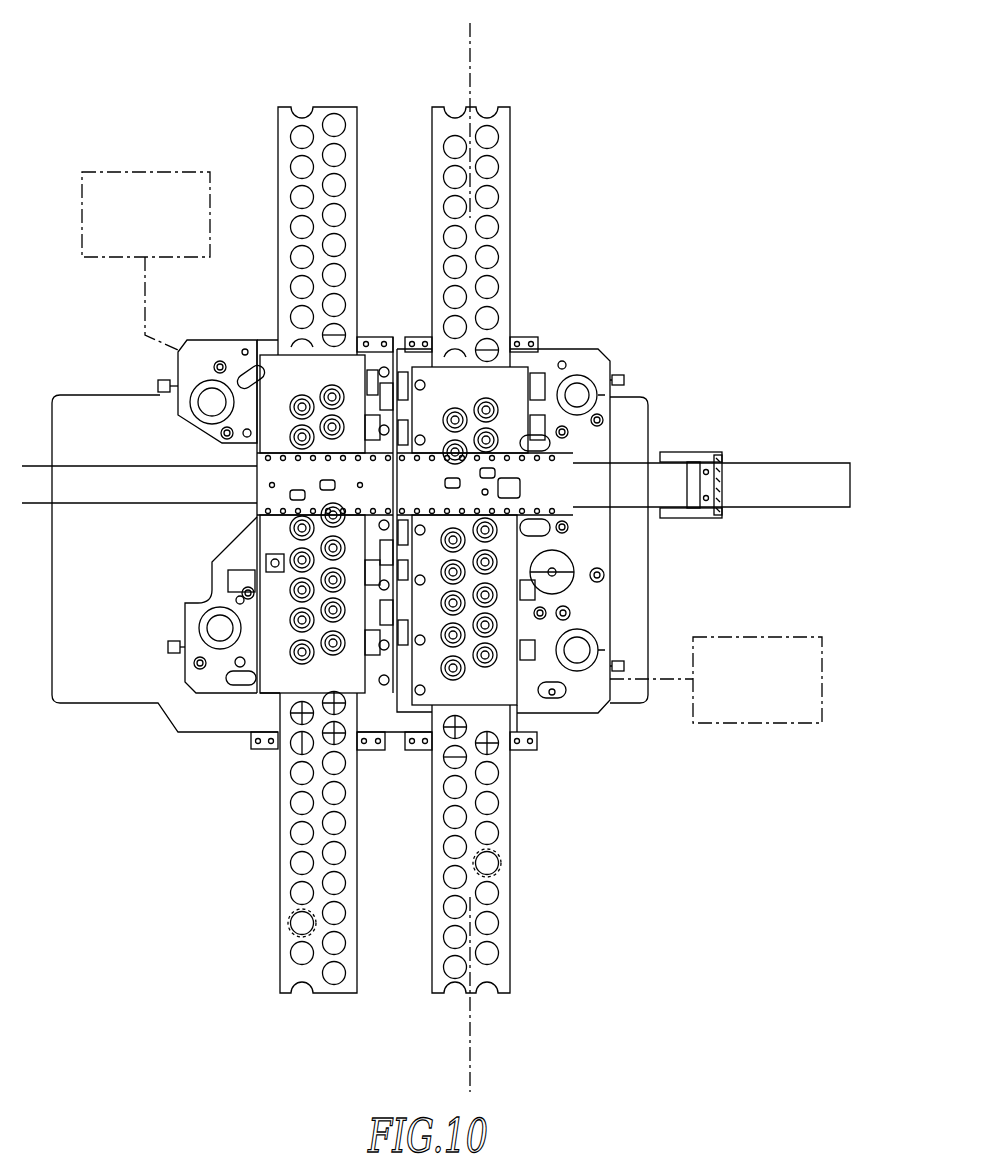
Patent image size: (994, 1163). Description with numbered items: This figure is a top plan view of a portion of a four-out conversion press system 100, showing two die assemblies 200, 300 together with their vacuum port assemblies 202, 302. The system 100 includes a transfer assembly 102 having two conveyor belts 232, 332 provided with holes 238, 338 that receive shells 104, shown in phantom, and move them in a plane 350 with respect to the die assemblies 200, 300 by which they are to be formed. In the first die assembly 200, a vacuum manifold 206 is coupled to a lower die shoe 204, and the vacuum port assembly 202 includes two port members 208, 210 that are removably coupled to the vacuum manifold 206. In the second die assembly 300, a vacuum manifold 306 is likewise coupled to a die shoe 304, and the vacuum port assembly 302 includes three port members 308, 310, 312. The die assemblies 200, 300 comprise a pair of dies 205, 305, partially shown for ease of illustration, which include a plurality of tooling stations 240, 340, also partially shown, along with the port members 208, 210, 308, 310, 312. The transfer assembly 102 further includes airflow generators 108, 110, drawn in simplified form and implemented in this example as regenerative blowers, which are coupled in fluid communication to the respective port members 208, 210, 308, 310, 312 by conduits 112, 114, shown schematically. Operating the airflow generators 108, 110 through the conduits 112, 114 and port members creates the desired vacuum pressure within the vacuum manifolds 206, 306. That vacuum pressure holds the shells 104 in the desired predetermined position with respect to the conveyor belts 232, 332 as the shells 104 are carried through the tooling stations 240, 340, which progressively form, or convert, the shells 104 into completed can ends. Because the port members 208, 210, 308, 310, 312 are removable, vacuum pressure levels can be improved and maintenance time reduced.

The press system 100 is at (42, 864).
The transfer assembly 102 is at (191, 870).
The shells 104 is at (291, 920).
The airflow generator 108 is at (745, 725).
The airflow generator 110 is at (138, 172).
The conduit 112 is at (145, 295).
The conduit 114 is at (670, 683).
The die assembly 200 is at (116, 740).
The vacuum port assembly 202 is at (181, 744).
The lower die shoe 204 is at (176, 356).
The die 205 is at (280, 562).
The vacuum manifold 206 is at (296, 682).
The port member 208 is at (240, 362).
The port member 210 is at (221, 676).
The conveyor belt 232 is at (311, 194).
The holes 238 is at (291, 227).
The tooling stations 240 is at (370, 317).
The die assembly 300 is at (612, 270).
The vacuum port assembly 302 is at (612, 772).
The die shoe 304 is at (607, 351).
The die 305 is at (496, 621).
The vacuum manifold 306 is at (500, 712).
The port member 308 is at (548, 440).
The port member 310 is at (548, 525).
The port member 312 is at (565, 688).
The conveyor belt 332 is at (508, 114).
The holes 338 is at (492, 837).
The tooling stations 340 is at (540, 325).
The plane 350 is at (470, 1022).